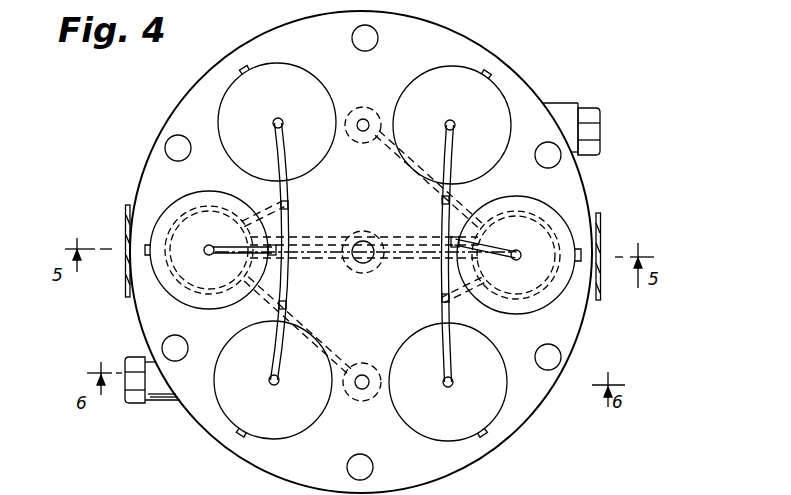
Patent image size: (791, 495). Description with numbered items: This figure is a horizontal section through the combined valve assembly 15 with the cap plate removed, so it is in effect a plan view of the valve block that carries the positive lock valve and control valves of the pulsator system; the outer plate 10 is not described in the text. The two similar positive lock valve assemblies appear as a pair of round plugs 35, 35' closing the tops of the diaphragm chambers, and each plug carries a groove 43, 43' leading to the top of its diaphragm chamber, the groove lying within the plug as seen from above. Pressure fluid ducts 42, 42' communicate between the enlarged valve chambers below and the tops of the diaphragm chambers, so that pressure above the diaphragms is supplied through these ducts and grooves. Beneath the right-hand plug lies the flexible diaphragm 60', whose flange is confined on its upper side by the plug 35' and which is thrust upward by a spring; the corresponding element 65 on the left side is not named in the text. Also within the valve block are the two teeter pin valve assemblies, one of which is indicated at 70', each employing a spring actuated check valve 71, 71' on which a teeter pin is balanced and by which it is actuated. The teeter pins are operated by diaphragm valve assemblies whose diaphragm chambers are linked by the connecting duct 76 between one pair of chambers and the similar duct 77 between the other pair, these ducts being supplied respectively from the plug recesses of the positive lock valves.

The housing plate 10 is at (190, 81).
The combination positive lock valve and control valve assembly 15 is at (137, 149).
The plug 35 is at (206, 250).
The plug 35' is at (519, 243).
The groove 43 is at (237, 265).
The groove 43' is at (490, 245).
The pressure fluid duct 42 is at (368, 232).
The pressure fluid duct 42' is at (363, 271).
The left disc ring 65 is at (212, 296).
The diaphragm 60' is at (516, 277).
The check valve 71 is at (412, 148).
The check valve 71' is at (320, 356).
The connecting duct 76 is at (288, 200).
The connecting duct 77 is at (443, 320).
The teeter pin valve assembly 70' is at (553, 426).